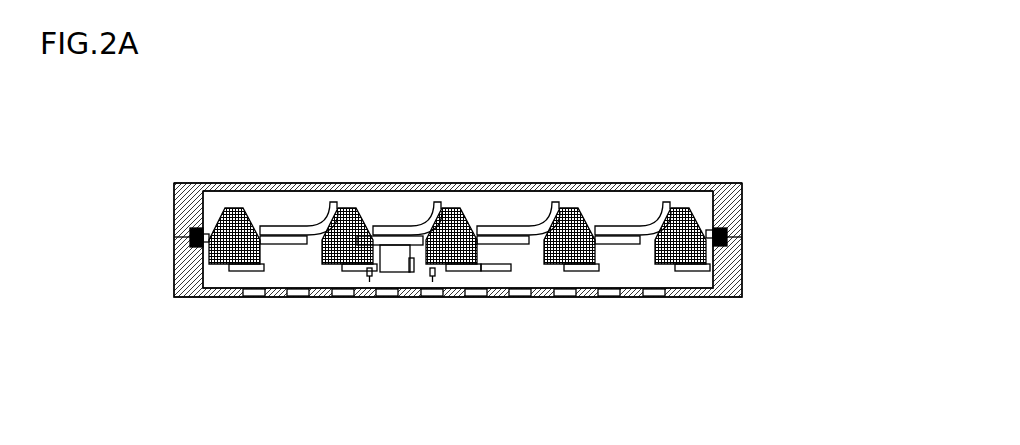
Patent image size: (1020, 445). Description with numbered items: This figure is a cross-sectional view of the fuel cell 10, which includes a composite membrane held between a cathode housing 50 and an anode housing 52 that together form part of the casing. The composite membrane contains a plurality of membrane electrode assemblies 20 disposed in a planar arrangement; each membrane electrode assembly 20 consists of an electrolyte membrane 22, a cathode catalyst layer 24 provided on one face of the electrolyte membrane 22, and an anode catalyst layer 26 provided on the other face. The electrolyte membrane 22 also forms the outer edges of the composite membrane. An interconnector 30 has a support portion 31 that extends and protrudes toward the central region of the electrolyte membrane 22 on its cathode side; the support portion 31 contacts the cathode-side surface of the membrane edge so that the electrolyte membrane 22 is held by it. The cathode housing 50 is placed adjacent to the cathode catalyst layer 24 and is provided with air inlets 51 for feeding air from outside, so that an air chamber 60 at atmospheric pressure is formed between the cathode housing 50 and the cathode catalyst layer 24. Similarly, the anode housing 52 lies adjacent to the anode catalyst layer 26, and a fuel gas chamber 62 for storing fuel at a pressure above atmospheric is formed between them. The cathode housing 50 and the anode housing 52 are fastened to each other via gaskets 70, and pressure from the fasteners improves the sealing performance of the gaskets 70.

The fuel cell 10 is at (466, 416).
The membrane electrode assembly 20 is at (398, 278).
The electrolyte membrane 22 is at (372, 235).
The cathode catalyst layer 24 is at (410, 268).
The anode catalyst layer 26 is at (408, 235).
The interconnector 30 is at (353, 237).
The support portion 31 is at (370, 288).
The cathode housing 50 is at (720, 292).
The air inlet 51 is at (568, 297).
The anode housing 52 is at (605, 188).
The air chamber 60 is at (507, 270).
The fuel gas chamber 62 is at (516, 203).
The gasket 70 is at (733, 233).